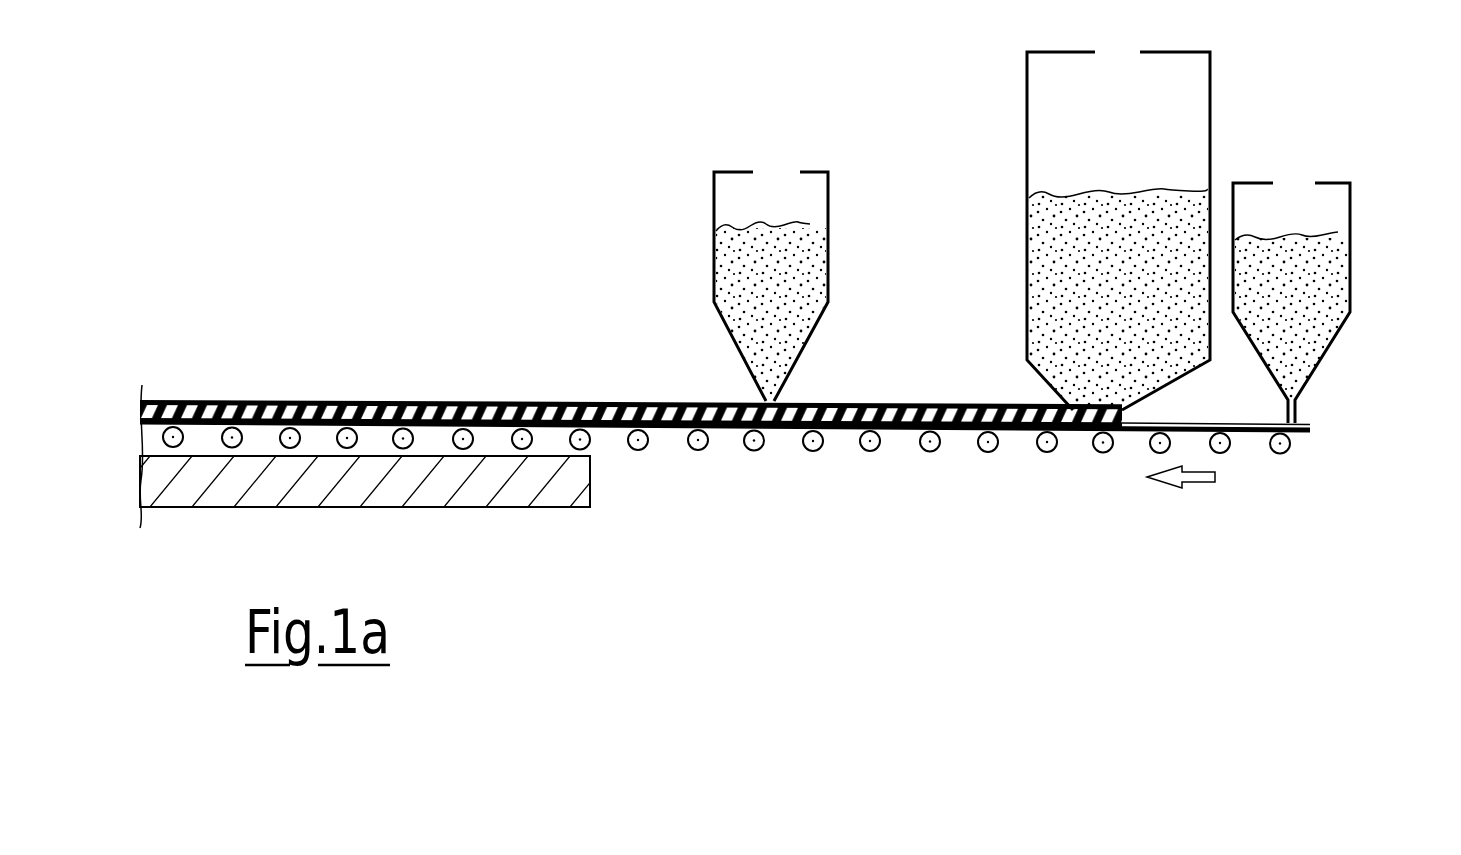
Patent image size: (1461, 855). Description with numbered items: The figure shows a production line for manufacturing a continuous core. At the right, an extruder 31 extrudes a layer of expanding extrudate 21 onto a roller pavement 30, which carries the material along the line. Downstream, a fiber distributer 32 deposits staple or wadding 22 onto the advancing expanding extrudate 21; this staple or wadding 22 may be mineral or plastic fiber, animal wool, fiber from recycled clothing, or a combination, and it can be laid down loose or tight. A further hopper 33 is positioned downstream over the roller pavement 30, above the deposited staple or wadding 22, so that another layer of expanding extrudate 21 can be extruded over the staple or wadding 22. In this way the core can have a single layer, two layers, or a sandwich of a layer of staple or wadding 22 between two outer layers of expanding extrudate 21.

The expanding extrudate 21 is at (340, 400).
The staple or wadding 22 is at (1040, 258).
The roller pavement 30 is at (1223, 443).
The extruder 31 is at (1318, 200).
The fiber distributer 32 is at (1180, 82).
The hopper for cover layer 21 33 is at (810, 192).